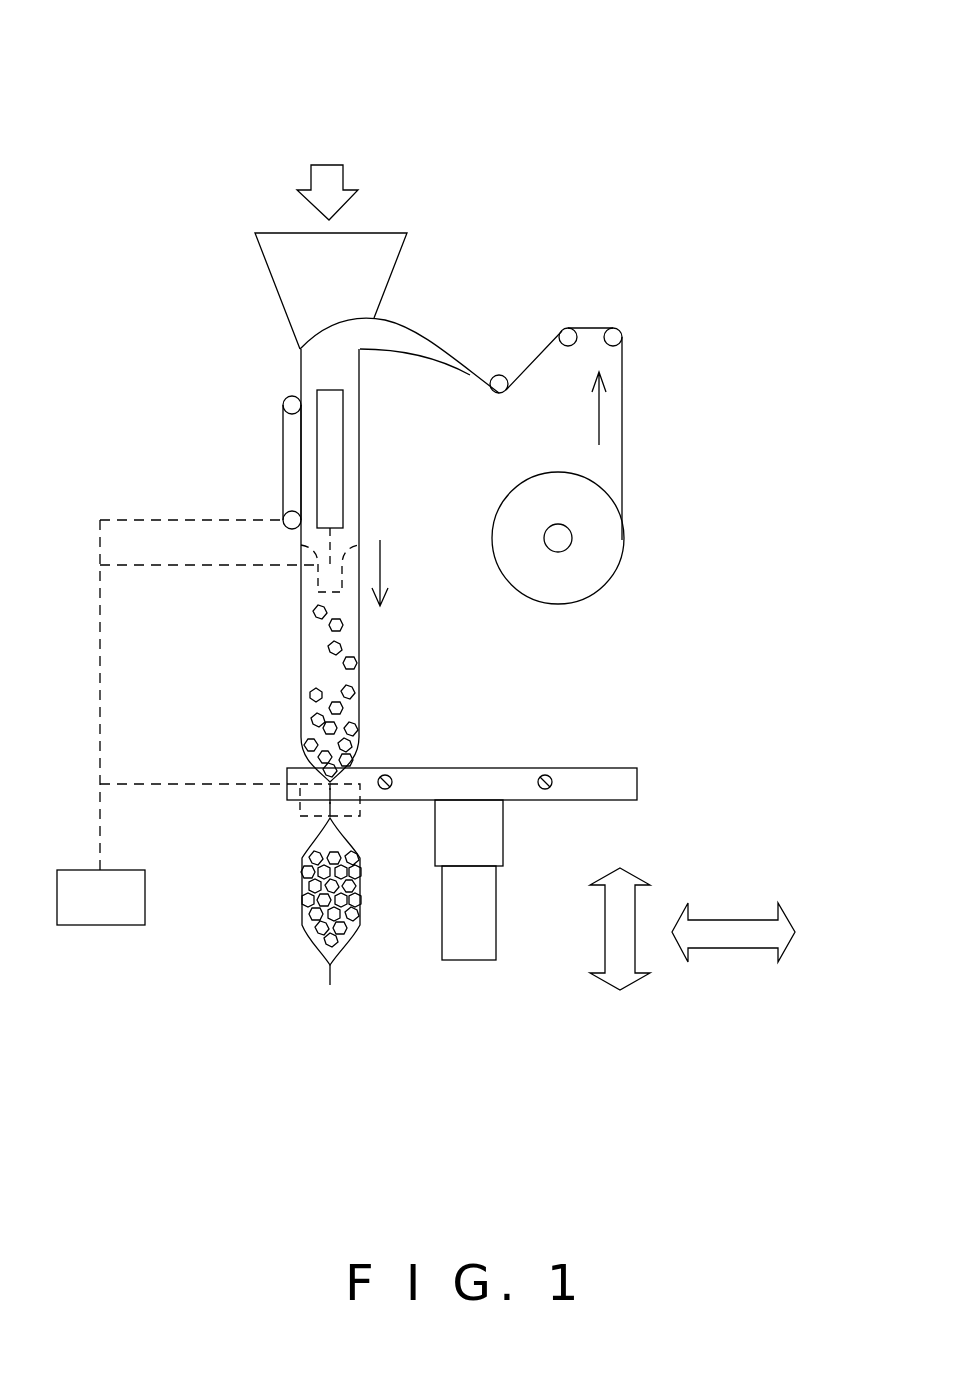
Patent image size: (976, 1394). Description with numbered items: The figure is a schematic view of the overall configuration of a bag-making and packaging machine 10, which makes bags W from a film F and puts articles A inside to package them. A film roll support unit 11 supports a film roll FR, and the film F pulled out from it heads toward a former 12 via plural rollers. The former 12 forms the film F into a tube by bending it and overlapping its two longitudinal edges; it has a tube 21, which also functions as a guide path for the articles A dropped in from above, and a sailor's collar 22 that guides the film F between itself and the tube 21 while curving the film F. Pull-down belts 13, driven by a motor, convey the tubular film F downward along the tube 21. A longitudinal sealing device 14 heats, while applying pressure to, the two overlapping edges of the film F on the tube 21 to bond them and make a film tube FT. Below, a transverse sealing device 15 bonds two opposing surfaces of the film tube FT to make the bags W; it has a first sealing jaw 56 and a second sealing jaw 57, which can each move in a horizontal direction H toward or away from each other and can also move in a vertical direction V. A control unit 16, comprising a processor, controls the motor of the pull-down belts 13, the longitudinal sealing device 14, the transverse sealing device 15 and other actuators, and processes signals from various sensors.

The bag-making and packaging machine 10 is at (127, 117).
The film roll support unit 11 is at (612, 604).
The former 12 is at (482, 215).
The pull-down belts 13 is at (328, 458).
The longitudinal sealing device 14 is at (291, 470).
The transverse sealing device 15 is at (666, 779).
The control unit 16 is at (100, 918).
The tube 21 is at (316, 373).
The sailor's collar 22 is at (383, 340).
The first sealing jaw 56 is at (313, 808).
The second sealing jaw 57 is at (345, 808).
The articles A is at (256, 984).
The film F is at (622, 433).
The film roll FR is at (598, 548).
The film tube FT is at (301, 646).
The bags W is at (306, 890).
The vertical direction V is at (620, 910).
The horizontal direction H is at (749, 932).